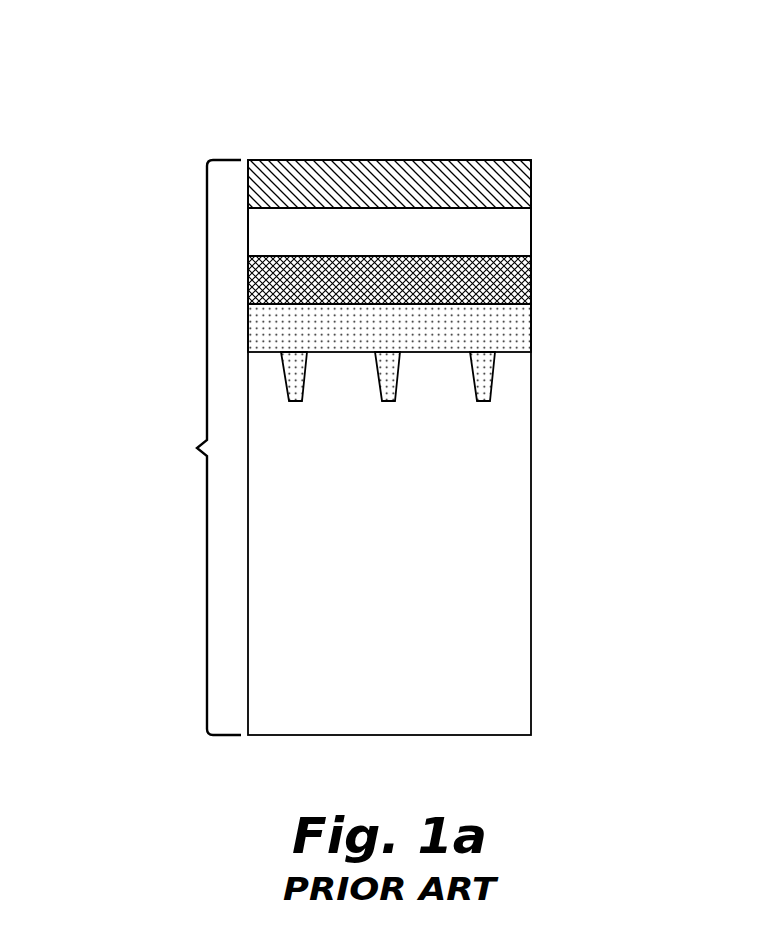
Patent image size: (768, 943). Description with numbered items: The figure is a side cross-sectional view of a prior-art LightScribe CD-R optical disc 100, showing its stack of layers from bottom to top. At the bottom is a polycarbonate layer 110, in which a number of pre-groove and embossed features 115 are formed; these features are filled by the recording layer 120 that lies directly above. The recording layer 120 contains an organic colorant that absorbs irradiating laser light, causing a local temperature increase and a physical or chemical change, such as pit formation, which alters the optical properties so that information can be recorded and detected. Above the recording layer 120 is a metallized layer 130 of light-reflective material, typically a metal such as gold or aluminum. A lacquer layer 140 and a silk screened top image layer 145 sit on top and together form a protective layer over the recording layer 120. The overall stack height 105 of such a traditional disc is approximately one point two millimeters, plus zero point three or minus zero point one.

The LightScribe CD optical disc 100 is at (680, 149).
The overall stack height 105 is at (191, 447).
The bottom polycarbonate layer 110 is at (531, 543).
The pre-groove and embossed features 115 is at (533, 352).
The recording layer 120 is at (531, 326).
The metallized layer 130 is at (531, 279).
The lacquer layer 140 is at (531, 228).
The silk screened top image layer 145 is at (531, 178).